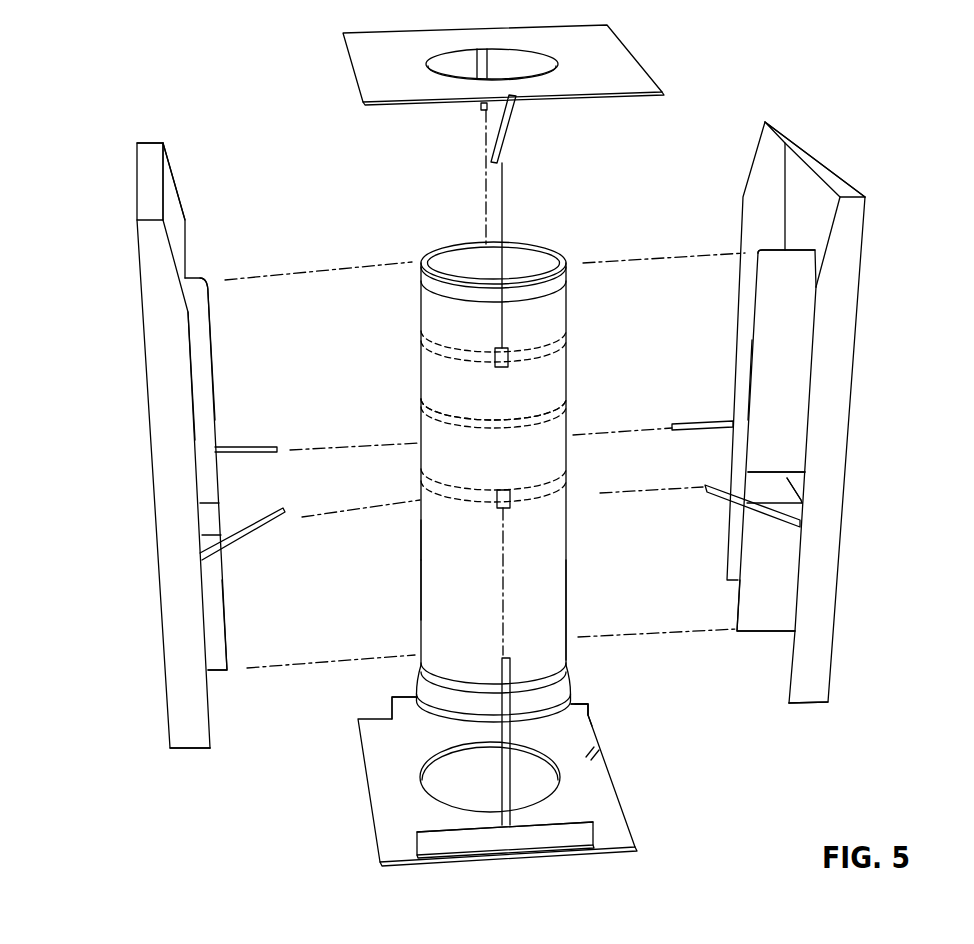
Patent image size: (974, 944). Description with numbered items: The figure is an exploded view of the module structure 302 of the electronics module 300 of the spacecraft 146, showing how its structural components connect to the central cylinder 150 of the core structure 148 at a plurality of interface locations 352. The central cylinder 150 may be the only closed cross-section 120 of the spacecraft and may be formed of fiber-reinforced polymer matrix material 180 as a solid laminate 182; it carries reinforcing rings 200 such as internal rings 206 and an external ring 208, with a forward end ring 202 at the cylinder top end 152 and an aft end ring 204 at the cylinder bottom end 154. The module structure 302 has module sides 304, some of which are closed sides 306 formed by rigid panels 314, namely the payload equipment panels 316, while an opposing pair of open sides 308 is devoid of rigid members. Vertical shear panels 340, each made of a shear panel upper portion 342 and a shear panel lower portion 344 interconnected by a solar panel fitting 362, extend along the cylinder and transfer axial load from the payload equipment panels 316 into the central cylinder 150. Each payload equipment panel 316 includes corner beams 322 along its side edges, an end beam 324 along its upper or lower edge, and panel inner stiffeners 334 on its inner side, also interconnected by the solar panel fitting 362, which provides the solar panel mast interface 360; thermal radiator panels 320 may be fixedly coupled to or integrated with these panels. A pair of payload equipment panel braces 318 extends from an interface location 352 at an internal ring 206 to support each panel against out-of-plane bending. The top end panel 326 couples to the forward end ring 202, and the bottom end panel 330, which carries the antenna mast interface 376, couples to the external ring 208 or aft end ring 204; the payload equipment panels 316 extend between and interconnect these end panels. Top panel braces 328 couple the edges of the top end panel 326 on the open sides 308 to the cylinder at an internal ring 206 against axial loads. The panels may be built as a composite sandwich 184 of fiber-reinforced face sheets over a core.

The closed cross-section 120 is at (502, 250).
The spacecraft 146 is at (203, 50).
The core structure 148 is at (560, 412).
The central cylinder 150 is at (555, 380).
The cylinder top end 152 is at (566, 262).
The cylinder bottom end 154 is at (590, 708).
The fiber-reinforced polymer matrix material 180 is at (566, 614).
The solid laminate 182 is at (425, 590).
The composite sandwich 184 is at (425, 540).
The reinforcing rings 200 is at (422, 320).
The forward end ring 202 is at (420, 262).
The aft end ring 204 is at (443, 717).
The internal ring 206 is at (422, 348).
The external ring 208 is at (422, 645).
The electronics module 300 is at (850, 60).
The module structure 302 is at (866, 100).
The module sides 304 is at (137, 190).
The closed sides 306 is at (143, 238).
The open sides 308 is at (598, 852).
The rigid panels 314 is at (137, 153).
The payload equipment panels 316 is at (150, 290).
The payload equipment panel braces 318 is at (245, 447).
The thermal radiator panels 320 is at (153, 492).
The corner beams 322 is at (185, 218).
The end beam 324 is at (152, 150).
The top end panel 326 is at (600, 50).
The top panel braces 328 is at (483, 106).
The bottom end panel 330 is at (600, 752).
The panel inner stiffeners 334 is at (797, 483).
The vertical shear panels 340 is at (210, 318).
The shear panel upper portion 342 is at (200, 372).
The shear panel lower portion 344 is at (224, 600).
The interface locations 352 is at (508, 352).
The solar panel mast interface 360 is at (772, 478).
The solar panel fitting 362 is at (222, 503).
The antenna mast interface 376 is at (515, 862).